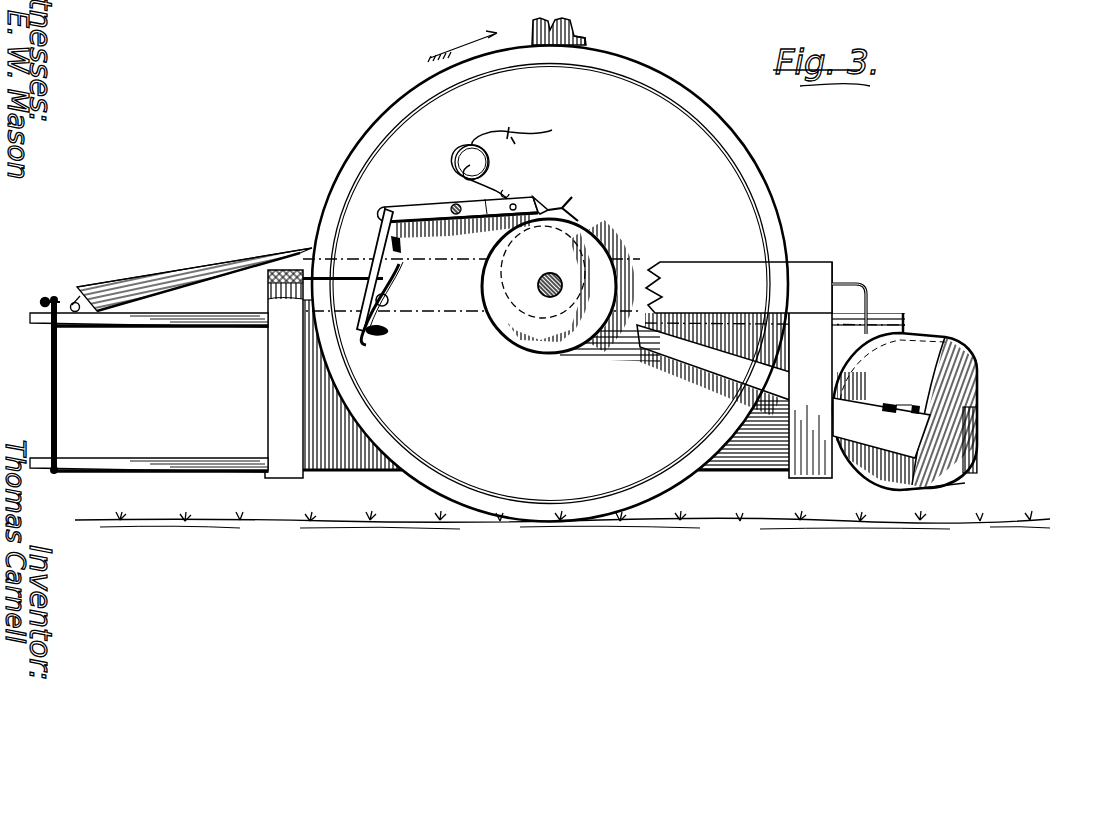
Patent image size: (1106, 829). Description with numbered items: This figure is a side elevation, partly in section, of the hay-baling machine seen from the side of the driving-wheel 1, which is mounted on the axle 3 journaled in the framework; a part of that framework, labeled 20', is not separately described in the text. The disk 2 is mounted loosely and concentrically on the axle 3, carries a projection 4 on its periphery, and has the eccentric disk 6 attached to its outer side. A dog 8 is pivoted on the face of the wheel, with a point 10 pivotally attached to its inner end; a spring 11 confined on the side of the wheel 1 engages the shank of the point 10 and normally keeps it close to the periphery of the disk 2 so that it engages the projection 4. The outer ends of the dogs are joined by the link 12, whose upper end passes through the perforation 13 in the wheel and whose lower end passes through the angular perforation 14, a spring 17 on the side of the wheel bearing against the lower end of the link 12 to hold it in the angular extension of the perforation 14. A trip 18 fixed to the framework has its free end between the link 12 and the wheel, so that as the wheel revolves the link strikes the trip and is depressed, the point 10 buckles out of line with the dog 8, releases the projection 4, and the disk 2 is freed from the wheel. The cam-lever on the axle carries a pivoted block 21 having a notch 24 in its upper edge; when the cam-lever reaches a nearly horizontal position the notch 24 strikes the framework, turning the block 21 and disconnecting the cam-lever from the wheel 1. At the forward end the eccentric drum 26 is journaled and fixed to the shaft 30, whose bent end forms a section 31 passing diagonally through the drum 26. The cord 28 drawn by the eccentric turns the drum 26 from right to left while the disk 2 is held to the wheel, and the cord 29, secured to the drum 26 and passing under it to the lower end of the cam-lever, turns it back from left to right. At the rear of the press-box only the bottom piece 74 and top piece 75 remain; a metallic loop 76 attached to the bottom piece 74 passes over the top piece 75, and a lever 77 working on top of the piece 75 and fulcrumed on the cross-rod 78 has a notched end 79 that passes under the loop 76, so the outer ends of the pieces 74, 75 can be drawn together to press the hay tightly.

The driving-wheel 1 is at (550, 276).
The disk 2 is at (592, 240).
The axle 3 is at (540, 291).
The projection 4 is at (572, 204).
The eccentric disk 6 is at (543, 272).
The dog 8 is at (441, 206).
The point 10 is at (530, 203).
The spring 11 is at (490, 165).
The link 12 is at (381, 253).
The perforation 13 is at (403, 246).
The angular perforation 14 is at (379, 337).
The spring 17 is at (390, 300).
The trip 18 is at (360, 292).
The standard 20' is at (549, 358).
The block 21 is at (566, 21).
The notch 24 is at (587, 36).
The eccentric drum 26 is at (975, 353).
The cord 28 is at (870, 328).
The cord 29 is at (850, 482).
The shaft 30 is at (916, 404).
The section 31 is at (884, 402).
The bottom piece 74 is at (150, 455).
The top piece 75 is at (172, 329).
The metallic loop 76 is at (50, 377).
The lever 77 is at (196, 264).
The cross-rod 78 is at (74, 302).
The notch 79 is at (42, 300).